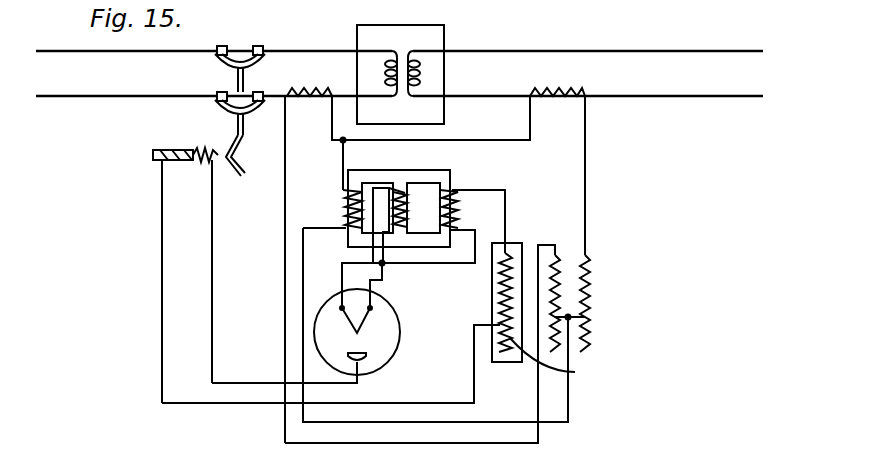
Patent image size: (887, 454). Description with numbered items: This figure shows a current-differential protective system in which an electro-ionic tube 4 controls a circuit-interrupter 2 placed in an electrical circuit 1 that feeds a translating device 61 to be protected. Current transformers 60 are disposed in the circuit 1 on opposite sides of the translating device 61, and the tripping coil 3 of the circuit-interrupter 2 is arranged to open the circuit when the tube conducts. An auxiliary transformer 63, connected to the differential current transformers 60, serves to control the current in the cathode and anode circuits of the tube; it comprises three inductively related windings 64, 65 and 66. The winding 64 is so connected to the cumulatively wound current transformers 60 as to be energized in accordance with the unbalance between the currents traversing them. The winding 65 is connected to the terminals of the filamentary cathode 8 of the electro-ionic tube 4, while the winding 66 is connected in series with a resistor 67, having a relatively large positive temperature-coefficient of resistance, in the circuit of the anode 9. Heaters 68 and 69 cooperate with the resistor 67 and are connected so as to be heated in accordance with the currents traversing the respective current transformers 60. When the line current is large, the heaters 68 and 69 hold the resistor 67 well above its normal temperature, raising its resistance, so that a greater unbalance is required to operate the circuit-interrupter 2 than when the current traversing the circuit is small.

The electrical circuit 1 is at (116, 80).
The circuit-interrupter 2 is at (250, 108).
The tripping coil 3 is at (190, 162).
The electro-ionic tube 4 is at (322, 340).
The filamentary cathode 8 is at (366, 320).
The anode 9 is at (362, 362).
The current transformers 60 is at (318, 100).
The translating device 61 is at (432, 42).
The auxiliary transformer 63 is at (443, 180).
The winding 64 is at (352, 222).
The winding 65 is at (403, 230).
The winding 66 is at (458, 210).
The resistor 67 is at (500, 298).
The heater 68 is at (556, 290).
The heater 69 is at (586, 322).